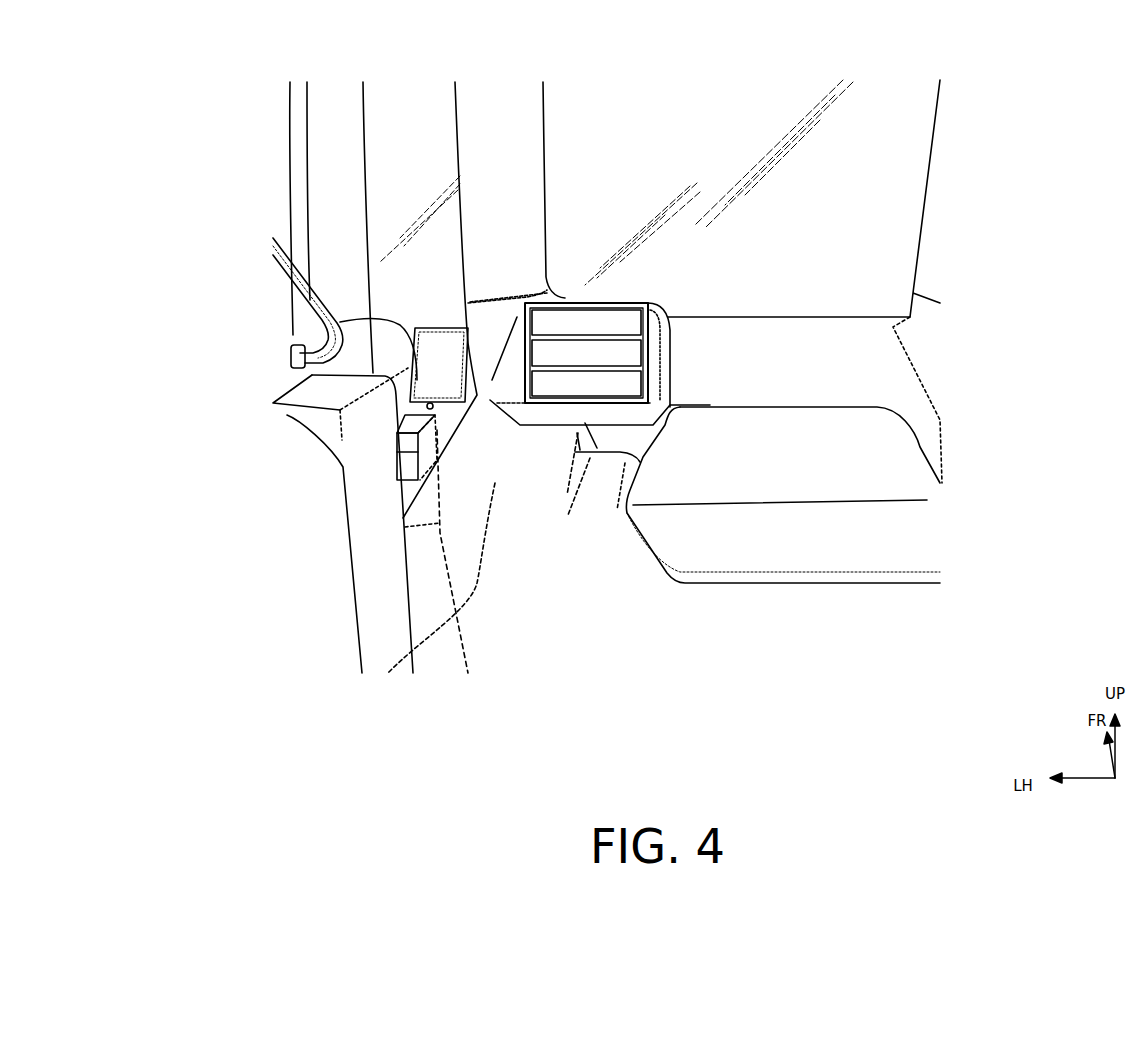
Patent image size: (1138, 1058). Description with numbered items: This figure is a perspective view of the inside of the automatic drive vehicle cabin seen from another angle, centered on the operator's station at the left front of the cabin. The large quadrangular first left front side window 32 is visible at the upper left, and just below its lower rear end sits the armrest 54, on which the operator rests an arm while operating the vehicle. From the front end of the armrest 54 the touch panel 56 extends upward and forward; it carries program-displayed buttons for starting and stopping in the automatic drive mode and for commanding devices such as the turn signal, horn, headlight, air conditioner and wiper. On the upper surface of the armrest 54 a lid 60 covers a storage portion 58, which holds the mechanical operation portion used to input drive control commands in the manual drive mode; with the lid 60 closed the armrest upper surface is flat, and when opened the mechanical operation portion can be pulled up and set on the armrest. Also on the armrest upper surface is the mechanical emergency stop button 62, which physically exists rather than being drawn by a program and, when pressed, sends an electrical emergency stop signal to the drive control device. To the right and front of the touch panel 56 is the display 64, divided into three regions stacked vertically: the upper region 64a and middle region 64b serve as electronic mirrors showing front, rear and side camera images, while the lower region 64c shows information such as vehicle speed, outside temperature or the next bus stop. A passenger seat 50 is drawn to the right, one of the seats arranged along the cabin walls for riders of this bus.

The first left front side window 32 is at (382, 170).
The passenger seat 50 is at (815, 558).
The armrest 54 is at (450, 423).
The touch panel 56 is at (425, 325).
The storage portion 58 is at (459, 566).
The lid 60 is at (412, 427).
The emergency stop button 62 is at (330, 323).
The display 64 is at (568, 303).
The upper region 64a is at (645, 318).
The middle region 64b is at (640, 352).
The lower region 64c is at (643, 385).